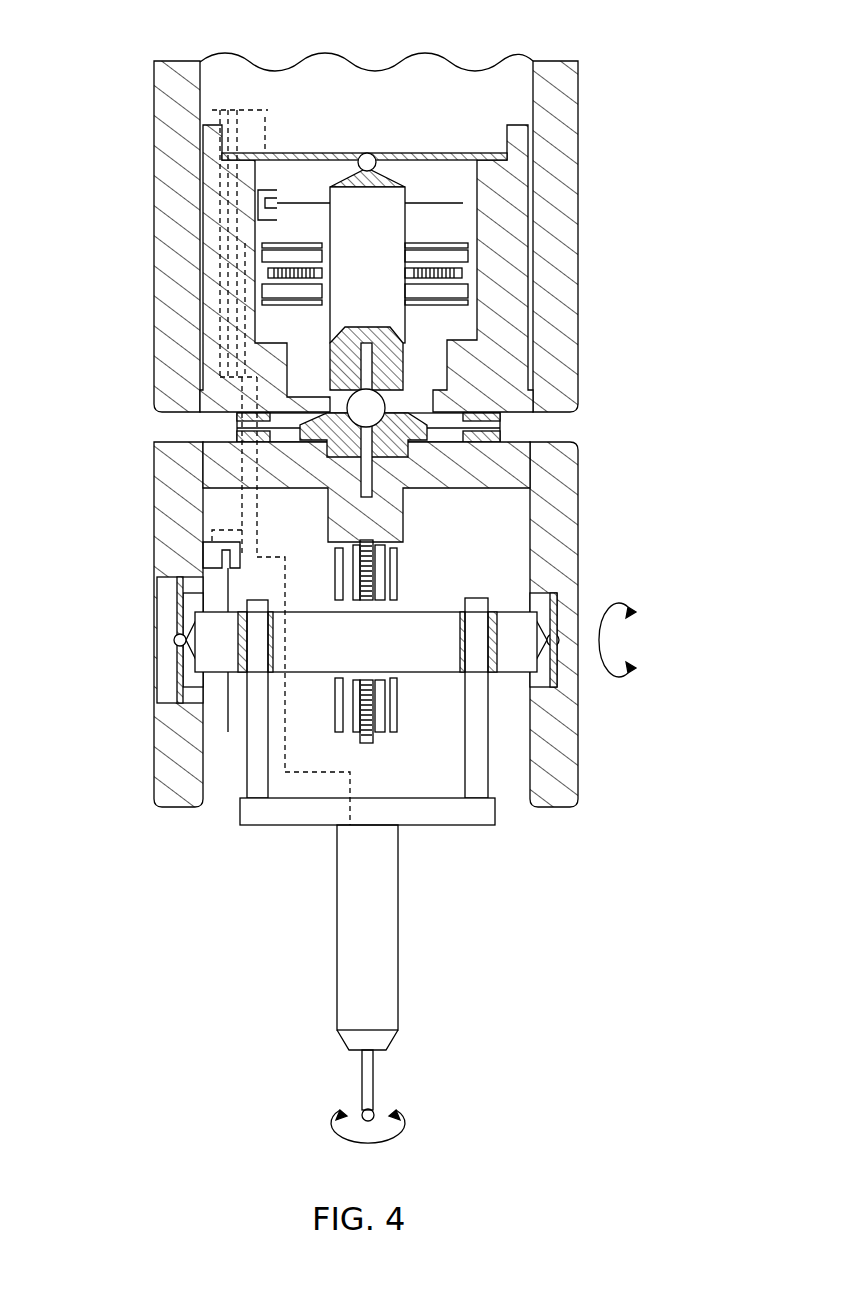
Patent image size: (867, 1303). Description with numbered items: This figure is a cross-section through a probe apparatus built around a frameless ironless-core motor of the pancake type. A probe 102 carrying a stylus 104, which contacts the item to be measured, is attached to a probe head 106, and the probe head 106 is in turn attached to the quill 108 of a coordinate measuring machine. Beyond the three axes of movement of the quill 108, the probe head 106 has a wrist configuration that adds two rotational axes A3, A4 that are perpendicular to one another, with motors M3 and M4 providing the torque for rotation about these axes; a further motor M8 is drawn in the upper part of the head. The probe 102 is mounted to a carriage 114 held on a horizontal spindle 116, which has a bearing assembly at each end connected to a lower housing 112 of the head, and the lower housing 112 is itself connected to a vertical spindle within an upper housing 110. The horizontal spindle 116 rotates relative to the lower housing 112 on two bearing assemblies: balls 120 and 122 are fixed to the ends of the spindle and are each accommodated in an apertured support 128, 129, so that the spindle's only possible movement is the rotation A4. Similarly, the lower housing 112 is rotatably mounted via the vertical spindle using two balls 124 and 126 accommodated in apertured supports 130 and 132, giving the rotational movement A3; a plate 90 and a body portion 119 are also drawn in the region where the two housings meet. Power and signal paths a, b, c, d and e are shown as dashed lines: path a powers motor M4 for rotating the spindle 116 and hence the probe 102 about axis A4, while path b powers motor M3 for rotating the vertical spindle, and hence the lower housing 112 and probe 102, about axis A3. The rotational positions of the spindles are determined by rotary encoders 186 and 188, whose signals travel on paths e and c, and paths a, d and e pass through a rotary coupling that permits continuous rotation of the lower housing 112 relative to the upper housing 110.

The quill 108 is at (152, 252).
The upper housing 110 is at (572, 403).
The support 130 is at (227, 382).
The support 132 is at (455, 154).
The ball 126 is at (364, 155).
The motor M8 is at (387, 197).
The rotary encoder 188 is at (278, 203).
The ball 124 is at (325, 395).
The motor M3 is at (472, 268).
The kinematic mount plate 90 is at (232, 417).
The housing top body 119 is at (408, 492).
The probe head 106 is at (155, 495).
The lower housing 112 is at (573, 489).
The support 128 is at (177, 603).
The ball 120 is at (176, 642).
The support 129 is at (562, 608).
The ball 122 is at (545, 640).
The horizontal spindle 116 is at (417, 662).
The rotary encoder 186 is at (257, 602).
The carriage 114 is at (237, 780).
The probe 102 is at (347, 885).
The stylus 104 is at (360, 1087).
The motor M4 is at (400, 563).
The rotational axis A4 is at (633, 640).
The rotational axis A3 is at (385, 1126).
The power path a is at (237, 112).
The power path b is at (243, 123).
The signal path c is at (266, 132).
The power and signal path d is at (228, 112).
The signal path e is at (220, 112).